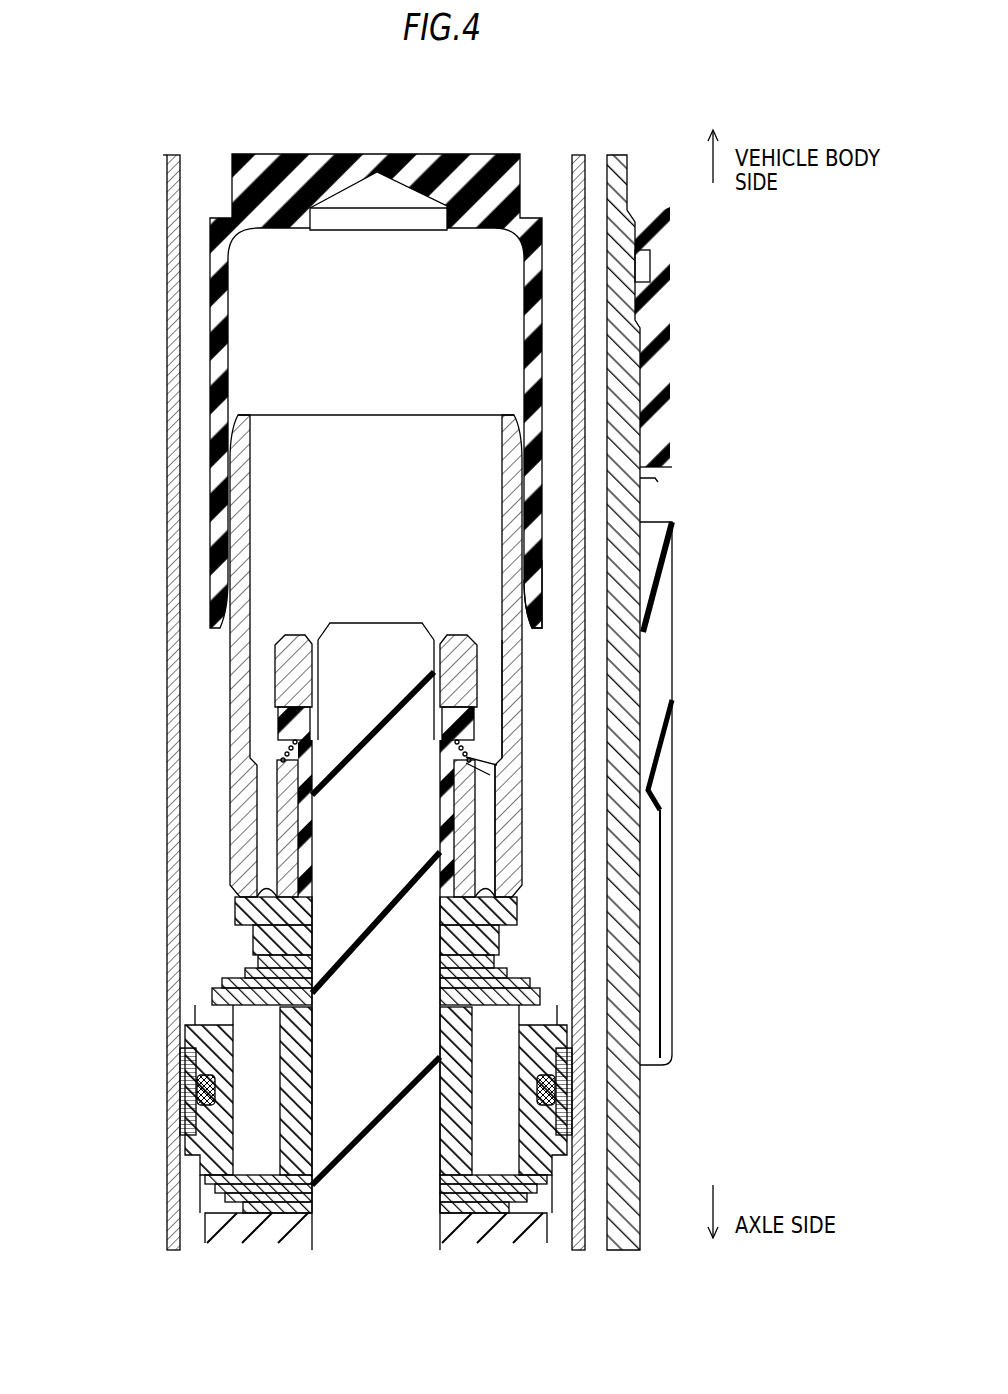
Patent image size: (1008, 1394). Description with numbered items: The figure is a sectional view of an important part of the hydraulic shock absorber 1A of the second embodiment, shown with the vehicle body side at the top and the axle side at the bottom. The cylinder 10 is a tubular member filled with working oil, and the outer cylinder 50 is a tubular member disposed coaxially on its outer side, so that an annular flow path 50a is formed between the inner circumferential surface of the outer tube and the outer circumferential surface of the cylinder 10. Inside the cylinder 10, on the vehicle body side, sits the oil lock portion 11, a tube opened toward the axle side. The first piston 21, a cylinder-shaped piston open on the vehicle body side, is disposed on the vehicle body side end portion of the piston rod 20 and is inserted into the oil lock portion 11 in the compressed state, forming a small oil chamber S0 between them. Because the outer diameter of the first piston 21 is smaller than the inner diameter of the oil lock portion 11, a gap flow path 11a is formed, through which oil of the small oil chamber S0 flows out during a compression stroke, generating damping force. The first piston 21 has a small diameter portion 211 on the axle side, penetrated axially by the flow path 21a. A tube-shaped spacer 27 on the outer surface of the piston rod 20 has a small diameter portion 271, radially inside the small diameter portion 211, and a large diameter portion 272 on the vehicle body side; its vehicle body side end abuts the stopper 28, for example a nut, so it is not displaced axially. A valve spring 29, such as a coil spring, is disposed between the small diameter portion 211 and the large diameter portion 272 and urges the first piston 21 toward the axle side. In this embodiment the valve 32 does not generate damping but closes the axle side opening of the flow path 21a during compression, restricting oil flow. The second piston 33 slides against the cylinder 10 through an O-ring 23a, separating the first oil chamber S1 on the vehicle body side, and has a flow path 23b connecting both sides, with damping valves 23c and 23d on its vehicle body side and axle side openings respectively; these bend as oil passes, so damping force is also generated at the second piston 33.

The hydraulic shock absorber 1A is at (659, 119).
The small oil chamber S0 is at (283, 275).
The first oil chamber S1 is at (212, 922).
The cylinder 10 is at (573, 337).
The oil lock portion 11 is at (535, 398).
The gap flow path 11a is at (525, 540).
The piston rod 20 is at (355, 633).
The first piston 21 is at (508, 645).
The flow path 21a is at (487, 818).
The small diameter portion 211 is at (300, 845).
The spacer 27 is at (83, 722).
The small diameter portion 271 is at (297, 790).
The large diameter portion 272 is at (300, 712).
The stopper 28 is at (300, 660).
The valve spring 29 is at (463, 750).
The valve 32 is at (520, 910).
The second piston 33 is at (567, 1157).
The outer cylinder 50 is at (626, 770).
The annular flow path 50a is at (598, 745).
The O-ring 23a is at (195, 1088).
The flow path 23b is at (257, 1087).
The damping valve 23c is at (202, 968).
The damping valve 23d is at (195, 1195).